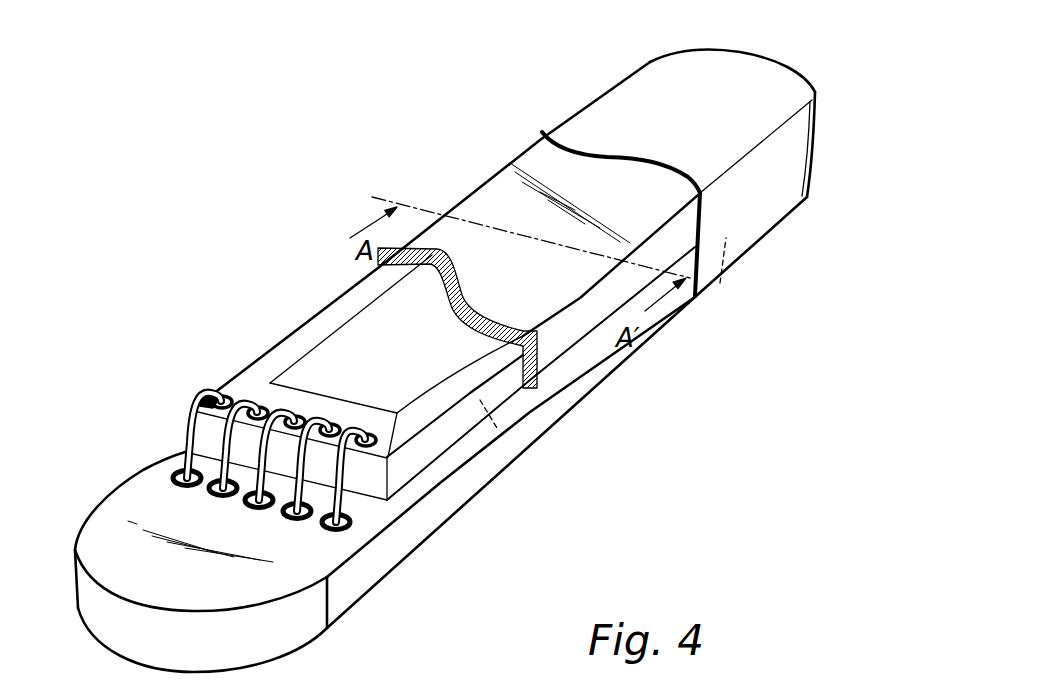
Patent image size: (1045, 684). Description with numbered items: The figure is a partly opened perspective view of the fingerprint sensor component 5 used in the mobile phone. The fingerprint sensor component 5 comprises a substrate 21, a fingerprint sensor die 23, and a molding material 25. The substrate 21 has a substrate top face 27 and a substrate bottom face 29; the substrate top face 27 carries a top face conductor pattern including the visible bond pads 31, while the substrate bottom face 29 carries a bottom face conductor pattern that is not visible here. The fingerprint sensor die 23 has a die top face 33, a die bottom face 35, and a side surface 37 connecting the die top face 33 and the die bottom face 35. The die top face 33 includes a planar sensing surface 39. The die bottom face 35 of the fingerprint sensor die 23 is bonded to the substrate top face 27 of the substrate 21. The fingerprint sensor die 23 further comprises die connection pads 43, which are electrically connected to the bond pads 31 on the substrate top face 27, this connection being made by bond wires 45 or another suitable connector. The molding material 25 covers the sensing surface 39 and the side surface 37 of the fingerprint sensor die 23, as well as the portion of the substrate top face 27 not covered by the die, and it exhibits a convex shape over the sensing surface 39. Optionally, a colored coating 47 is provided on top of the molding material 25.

The fingerprint sensor component 5 is at (522, 78).
The substrate 21 is at (572, 410).
The fingerprint sensor die 23 is at (528, 368).
The molding material 25 is at (493, 189).
The substrate top face 27 is at (453, 453).
The substrate bottom face 29 is at (720, 285).
The bond pads 31 is at (170, 473).
The die top face 33 is at (260, 387).
The die bottom face 35 is at (497, 427).
The side surface 37 is at (413, 457).
The planar sensing surface 39 is at (378, 327).
The die connection pads 43 is at (211, 386).
The bond wires 45 is at (190, 418).
The colored coating 47 is at (611, 140).